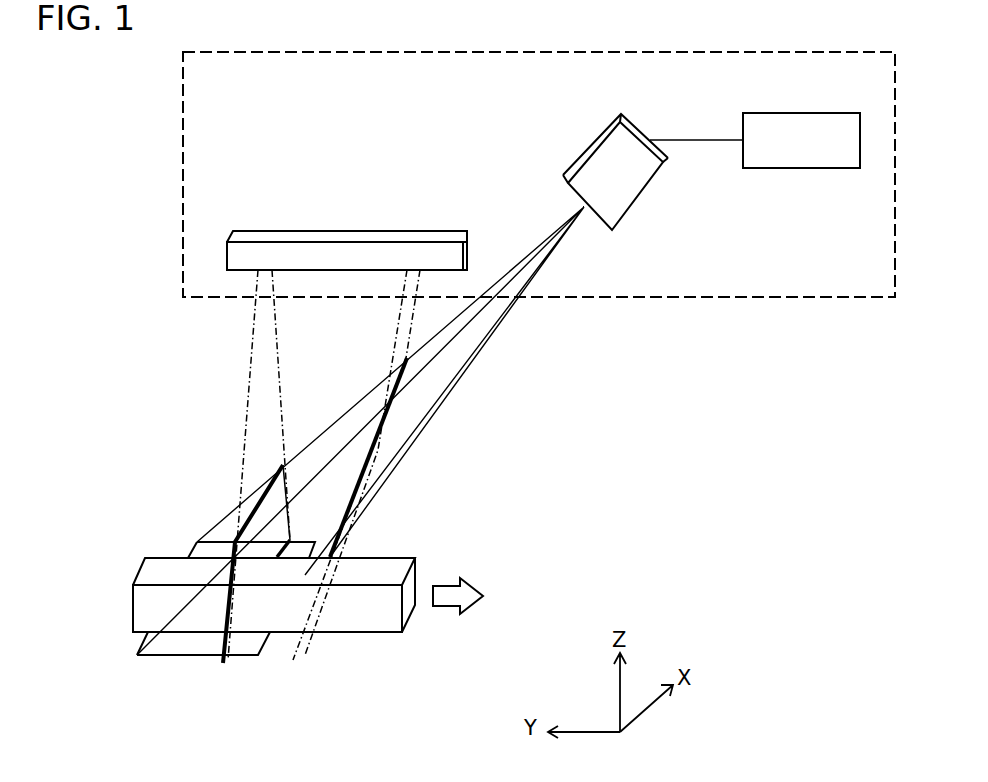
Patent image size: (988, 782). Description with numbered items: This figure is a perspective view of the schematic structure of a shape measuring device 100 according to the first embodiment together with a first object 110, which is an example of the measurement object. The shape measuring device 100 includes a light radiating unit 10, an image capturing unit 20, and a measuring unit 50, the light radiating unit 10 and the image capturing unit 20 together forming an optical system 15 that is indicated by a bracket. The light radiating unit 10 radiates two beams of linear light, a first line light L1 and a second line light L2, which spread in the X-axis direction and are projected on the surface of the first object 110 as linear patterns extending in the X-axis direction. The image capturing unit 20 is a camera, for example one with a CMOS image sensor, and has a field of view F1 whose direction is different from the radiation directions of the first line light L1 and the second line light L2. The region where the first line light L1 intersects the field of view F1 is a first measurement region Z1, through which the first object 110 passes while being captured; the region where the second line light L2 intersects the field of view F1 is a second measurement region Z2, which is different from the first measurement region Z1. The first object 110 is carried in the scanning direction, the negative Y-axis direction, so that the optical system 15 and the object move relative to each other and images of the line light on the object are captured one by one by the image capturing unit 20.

The shape measuring device 100 is at (683, 298).
The optical system 15 is at (557, 113).
The light radiating unit 10 is at (447, 233).
The image capturing unit 20 is at (578, 161).
The measuring unit 50 is at (820, 168).
The first line light L1 is at (245, 397).
The second line light L2 is at (398, 352).
The first measurement region Z1 is at (222, 663).
The second measurement region Z2 is at (388, 437).
The field of view F1 is at (252, 658).
The first object 110 is at (392, 565).